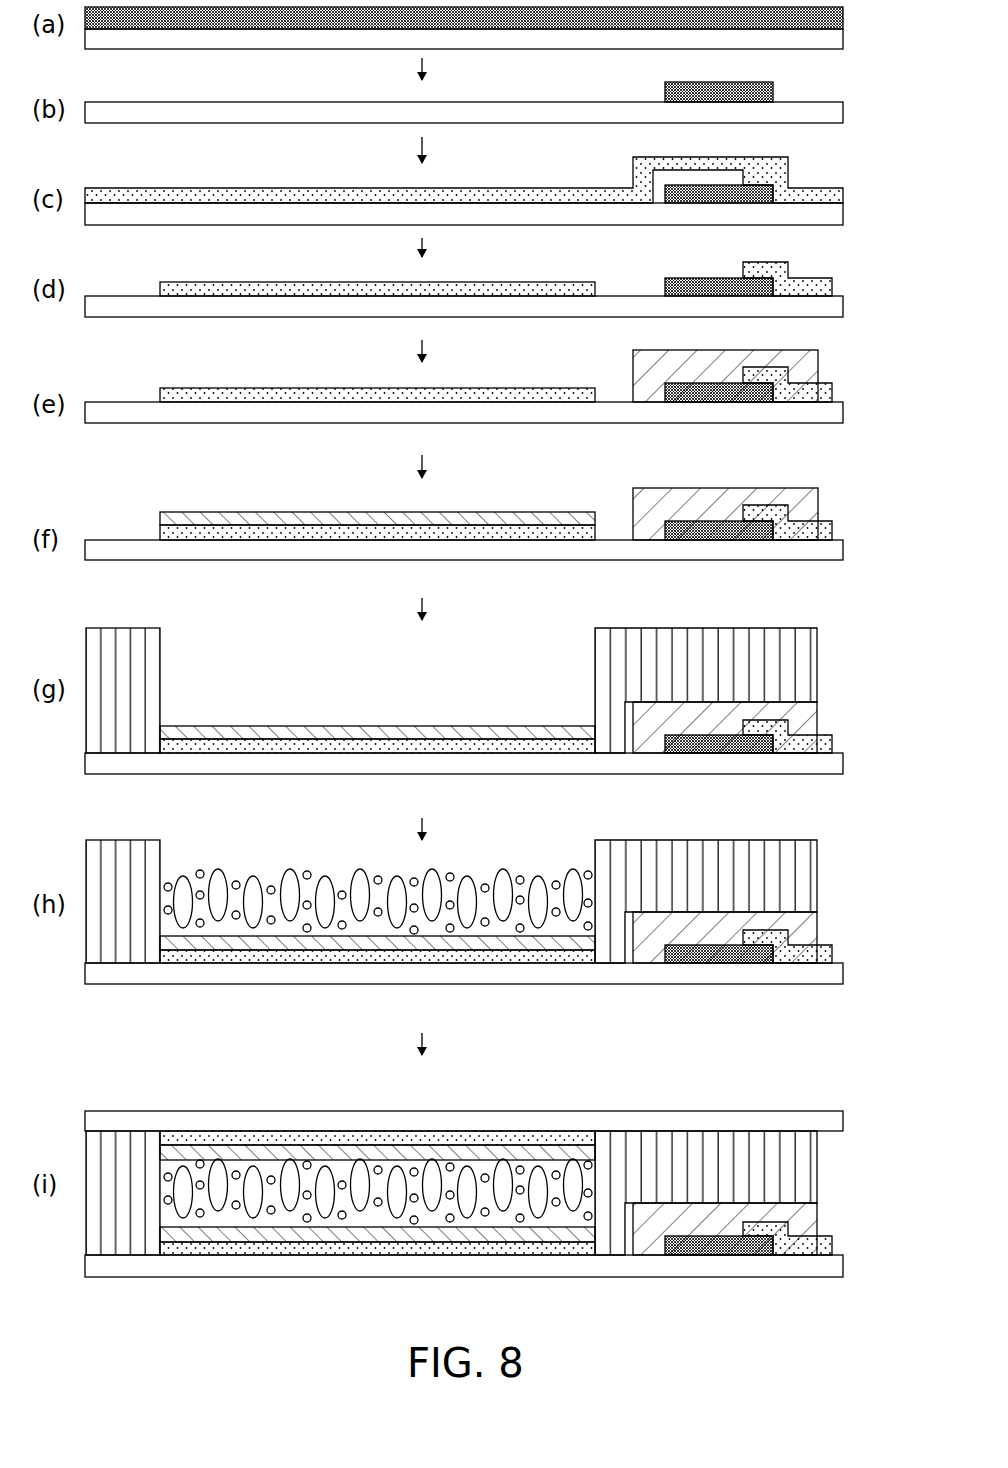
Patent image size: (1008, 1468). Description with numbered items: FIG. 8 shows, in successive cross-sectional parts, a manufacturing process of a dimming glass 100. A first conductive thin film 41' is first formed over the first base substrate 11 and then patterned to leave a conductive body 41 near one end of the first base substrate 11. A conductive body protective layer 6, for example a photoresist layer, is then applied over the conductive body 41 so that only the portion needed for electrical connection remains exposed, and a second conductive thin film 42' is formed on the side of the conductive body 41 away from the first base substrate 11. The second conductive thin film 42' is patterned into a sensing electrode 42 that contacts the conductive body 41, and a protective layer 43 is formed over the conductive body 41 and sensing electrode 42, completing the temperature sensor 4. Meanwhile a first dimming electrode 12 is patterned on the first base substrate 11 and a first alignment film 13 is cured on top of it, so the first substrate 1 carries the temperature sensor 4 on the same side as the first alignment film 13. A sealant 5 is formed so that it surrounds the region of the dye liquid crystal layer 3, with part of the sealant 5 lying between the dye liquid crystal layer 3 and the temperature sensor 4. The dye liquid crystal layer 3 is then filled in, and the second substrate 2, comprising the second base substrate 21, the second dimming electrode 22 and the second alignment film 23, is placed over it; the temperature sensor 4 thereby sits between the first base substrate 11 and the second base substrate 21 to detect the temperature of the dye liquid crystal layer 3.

The first substrate 1 is at (295, 592).
The first base substrate 11 is at (174, 47).
The first dimming electrode 12 is at (233, 196).
The first alignment film 13 is at (288, 519).
The second substrate 2 is at (242, 1084).
The second base substrate 21 is at (248, 1122).
The second dimming electrode 22 is at (302, 1138).
The second alignment film 23 is at (355, 1153).
The dye liquid crystal layer 3 is at (475, 930).
The temperature sensor 4 is at (643, 449).
The conductive body 41 is at (719, 697).
The first conductive thin film 41' is at (464, 45).
The sensing electrode 42 is at (787, 787).
The second conductive thin film 42' is at (796, 228).
The protective layer 43 is at (655, 392).
The sealant 5 is at (607, 745).
The conductive body protective layer 6 is at (660, 196).
The dimming glass 100 is at (850, 1110).